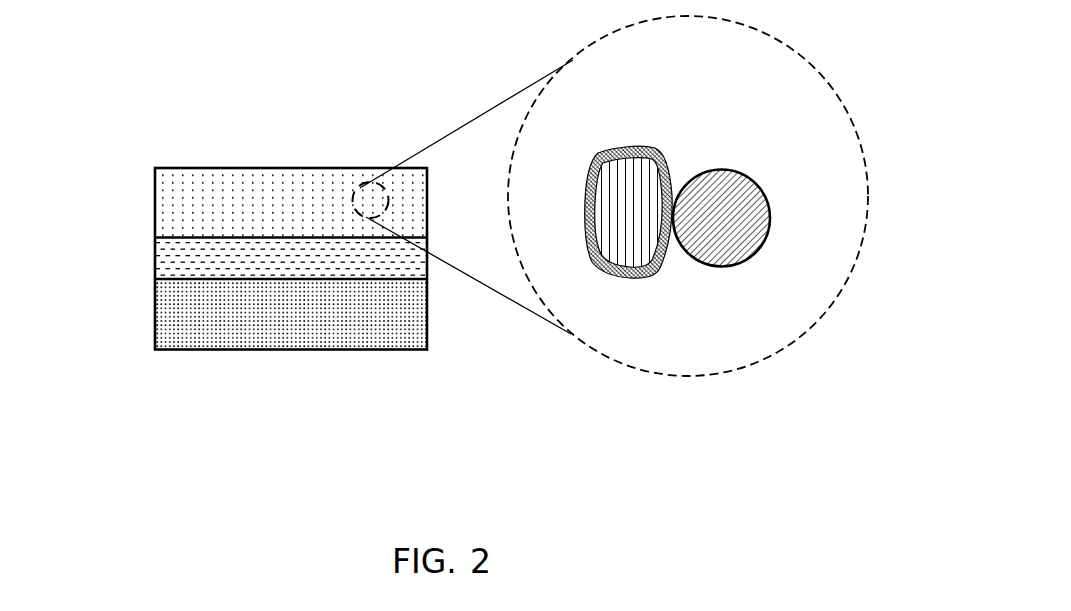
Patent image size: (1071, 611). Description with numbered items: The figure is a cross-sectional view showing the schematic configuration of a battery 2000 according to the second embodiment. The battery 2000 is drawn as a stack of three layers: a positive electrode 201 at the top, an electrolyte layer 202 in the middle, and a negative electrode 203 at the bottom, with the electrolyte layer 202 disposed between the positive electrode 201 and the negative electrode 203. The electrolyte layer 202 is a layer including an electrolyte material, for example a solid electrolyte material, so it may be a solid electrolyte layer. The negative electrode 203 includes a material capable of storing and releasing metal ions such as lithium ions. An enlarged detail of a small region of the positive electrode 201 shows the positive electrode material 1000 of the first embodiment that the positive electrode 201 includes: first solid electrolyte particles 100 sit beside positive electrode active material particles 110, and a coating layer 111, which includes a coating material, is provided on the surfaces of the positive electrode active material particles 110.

The battery 2000 is at (242, 221).
The positive electrode 201 is at (190, 188).
The electrolyte layer 202 is at (190, 257).
The negative electrode 203 is at (190, 314).
The positive electrode material 1000 is at (707, 114).
The first solid electrolyte particles 100 is at (743, 197).
The positive electrode active material particles 110 is at (628, 210).
The coating layer 111 is at (622, 277).